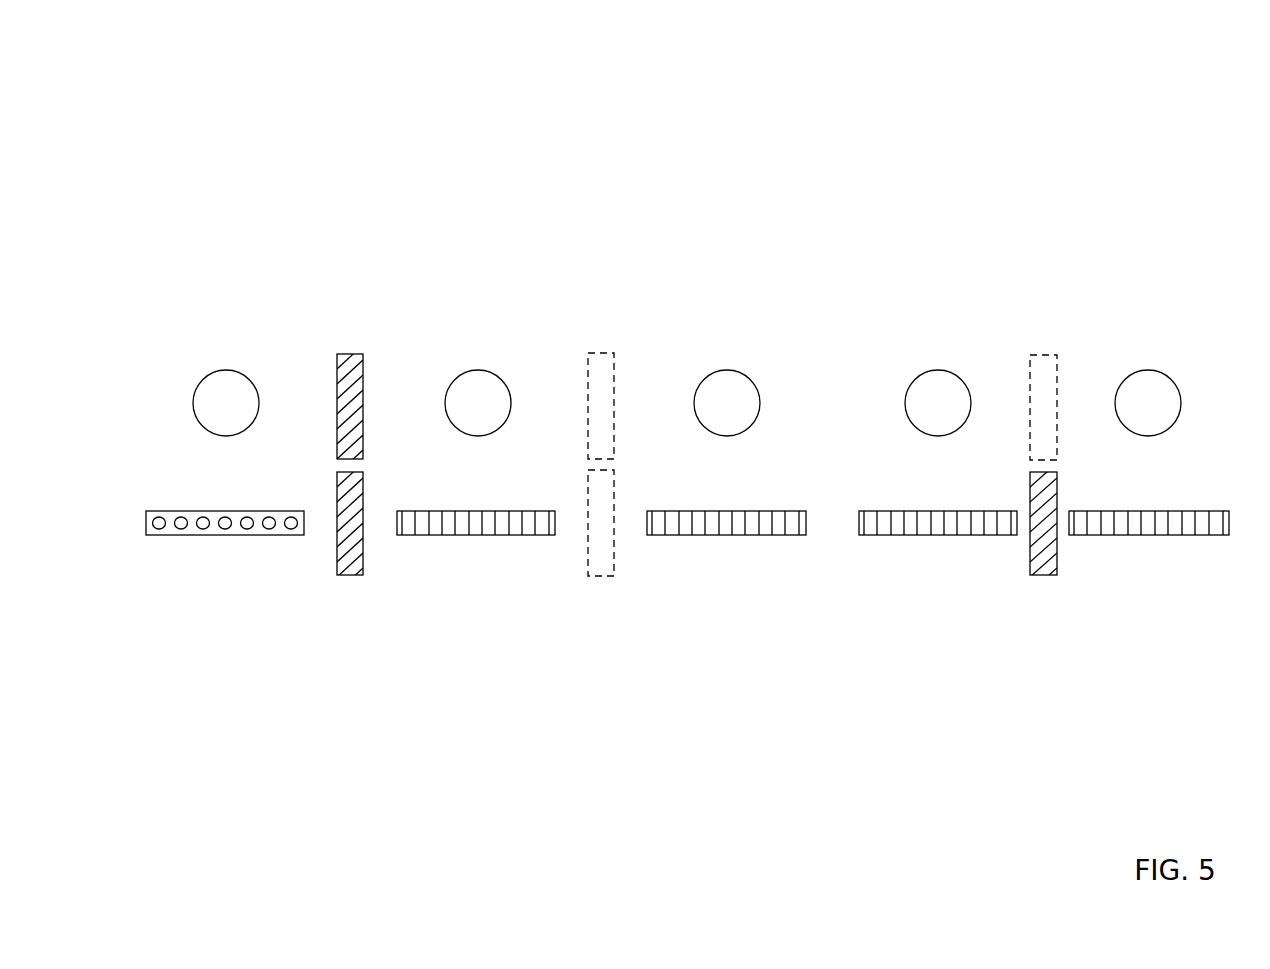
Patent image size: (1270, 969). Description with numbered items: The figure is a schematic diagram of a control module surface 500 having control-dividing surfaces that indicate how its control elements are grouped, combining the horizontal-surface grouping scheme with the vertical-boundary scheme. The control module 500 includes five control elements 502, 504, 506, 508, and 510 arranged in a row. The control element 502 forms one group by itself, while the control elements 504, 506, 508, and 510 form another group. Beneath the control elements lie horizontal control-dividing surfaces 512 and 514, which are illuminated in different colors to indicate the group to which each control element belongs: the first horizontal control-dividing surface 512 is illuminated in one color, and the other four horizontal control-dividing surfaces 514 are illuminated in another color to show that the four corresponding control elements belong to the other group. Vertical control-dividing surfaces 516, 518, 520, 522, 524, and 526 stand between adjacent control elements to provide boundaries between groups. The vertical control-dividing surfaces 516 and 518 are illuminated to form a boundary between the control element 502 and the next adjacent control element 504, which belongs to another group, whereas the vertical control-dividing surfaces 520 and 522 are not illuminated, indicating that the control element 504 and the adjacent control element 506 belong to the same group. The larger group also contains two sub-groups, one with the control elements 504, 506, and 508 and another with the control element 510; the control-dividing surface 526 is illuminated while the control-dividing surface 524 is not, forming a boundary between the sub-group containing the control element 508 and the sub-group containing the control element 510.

The control module surface 500 is at (878, 171).
The control element 502 is at (226, 370).
The control element 504 is at (478, 370).
The control element 506 is at (727, 370).
The control element 508 is at (938, 370).
The control element 510 is at (1148, 370).
The first horizontal control-dividing surface 512 is at (282, 535).
The horizontal control-dividing surfaces 514 is at (533, 535).
The vertical control-dividing surface 516 is at (350, 354).
The vertical control-dividing surface 518 is at (350, 575).
The vertical control-dividing surface 520 is at (605, 353).
The vertical control-dividing surface 522 is at (605, 576).
The control-dividing surface 524 is at (1048, 355).
The control-dividing surface 526 is at (1047, 575).